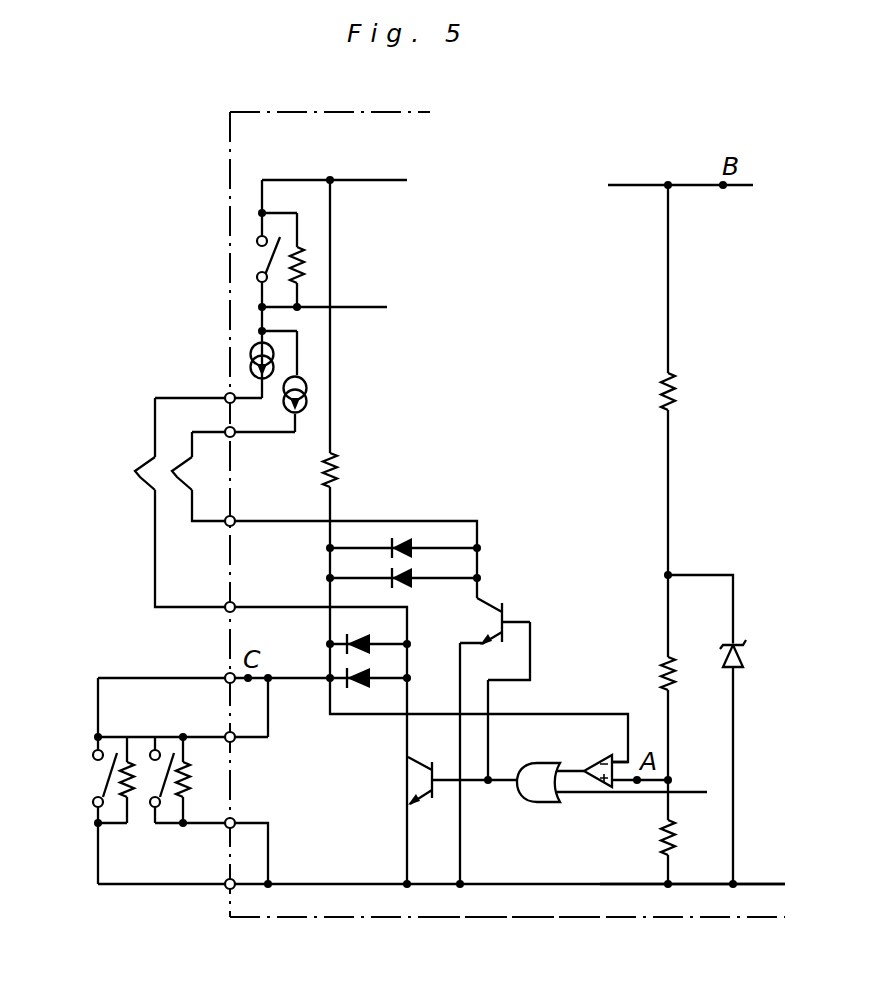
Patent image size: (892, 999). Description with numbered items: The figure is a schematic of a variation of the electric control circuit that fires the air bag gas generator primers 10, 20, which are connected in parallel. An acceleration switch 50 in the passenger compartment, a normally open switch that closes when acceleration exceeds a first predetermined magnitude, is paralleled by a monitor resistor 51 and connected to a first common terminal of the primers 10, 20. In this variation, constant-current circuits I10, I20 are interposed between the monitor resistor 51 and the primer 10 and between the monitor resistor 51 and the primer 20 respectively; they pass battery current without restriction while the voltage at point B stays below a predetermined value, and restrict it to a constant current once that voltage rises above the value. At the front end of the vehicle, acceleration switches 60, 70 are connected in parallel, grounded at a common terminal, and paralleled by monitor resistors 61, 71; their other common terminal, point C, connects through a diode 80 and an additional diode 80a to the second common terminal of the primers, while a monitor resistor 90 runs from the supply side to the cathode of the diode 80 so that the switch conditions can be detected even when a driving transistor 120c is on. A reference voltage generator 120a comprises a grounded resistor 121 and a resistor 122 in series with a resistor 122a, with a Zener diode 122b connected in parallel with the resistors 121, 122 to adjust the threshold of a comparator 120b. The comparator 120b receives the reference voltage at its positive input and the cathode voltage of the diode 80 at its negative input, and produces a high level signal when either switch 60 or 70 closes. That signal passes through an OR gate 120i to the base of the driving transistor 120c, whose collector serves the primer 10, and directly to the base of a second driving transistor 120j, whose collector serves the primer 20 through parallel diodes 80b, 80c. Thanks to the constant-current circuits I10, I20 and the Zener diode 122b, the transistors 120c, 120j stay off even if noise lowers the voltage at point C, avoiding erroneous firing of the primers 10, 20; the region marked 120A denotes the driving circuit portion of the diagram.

The acceleration switch 50 is at (258, 264).
The monitor resistor 51 is at (306, 268).
The constant-current circuit I10 is at (252, 358).
The constant-current circuit I20 is at (308, 395).
The primer 10 is at (136, 480).
The primer 20 is at (182, 480).
The monitor resistor 90 is at (323, 476).
The diode 80 is at (356, 683).
The additional diode 80a is at (368, 639).
The additional diode 80b is at (410, 548).
The additional diode 80c is at (395, 575).
The driving transistor 120j is at (505, 612).
The driving transistor 120c is at (424, 776).
The OR gate 120i is at (527, 798).
The comparator 120b is at (600, 758).
The resistor 121 is at (653, 848).
The resistor 122 is at (680, 668).
The resistor 122a is at (678, 394).
The Zener diode 122b is at (740, 650).
The acceleration switch 60 is at (100, 782).
The acceleration switch 70 is at (162, 778).
The monitor resistor 61 is at (128, 797).
The monitor resistor 71 is at (186, 766).
The reference voltage generator 120a is at (667, 892).
The control circuit 120A is at (518, 903).